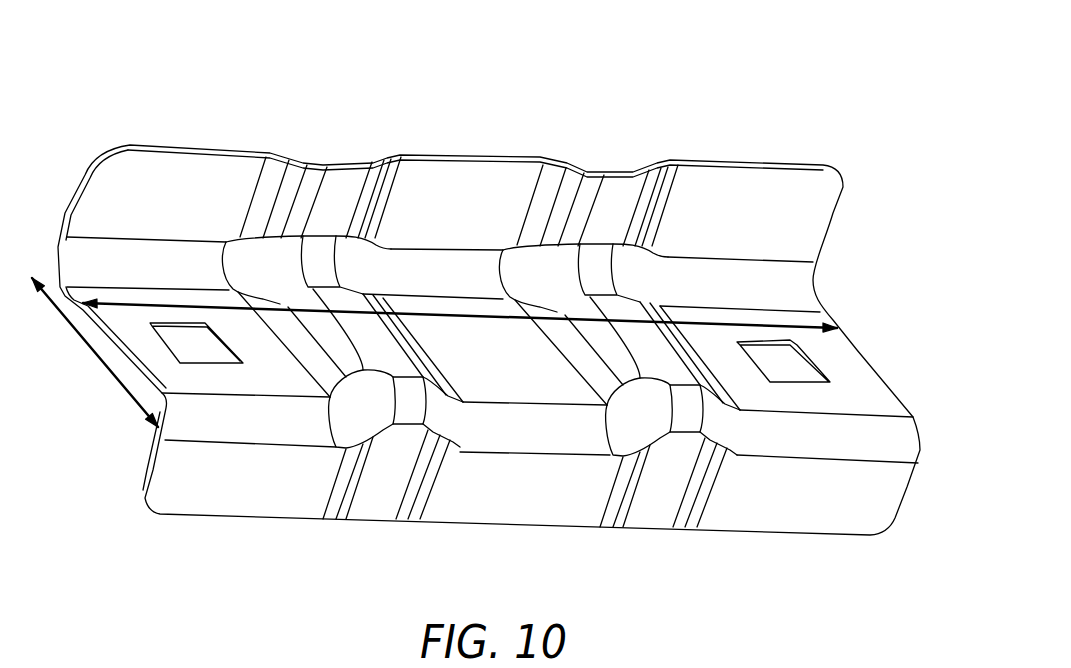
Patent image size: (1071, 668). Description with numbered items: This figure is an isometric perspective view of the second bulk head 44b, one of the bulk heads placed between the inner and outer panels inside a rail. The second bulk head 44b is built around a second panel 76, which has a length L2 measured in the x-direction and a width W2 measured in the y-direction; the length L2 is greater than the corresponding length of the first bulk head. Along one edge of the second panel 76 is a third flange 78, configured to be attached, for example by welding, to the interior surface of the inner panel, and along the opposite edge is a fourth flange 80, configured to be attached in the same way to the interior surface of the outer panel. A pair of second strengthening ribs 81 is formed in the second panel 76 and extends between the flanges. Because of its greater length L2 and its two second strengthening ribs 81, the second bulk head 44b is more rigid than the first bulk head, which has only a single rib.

The second bulk head 44b is at (133, 56).
The third flange 78 is at (472, 170).
The second strengthening ribs 81 is at (330, 297).
The second panel 76 is at (230, 380).
The fourth flange 80 is at (790, 508).
The length L2 is at (463, 318).
The width W2 is at (108, 372).